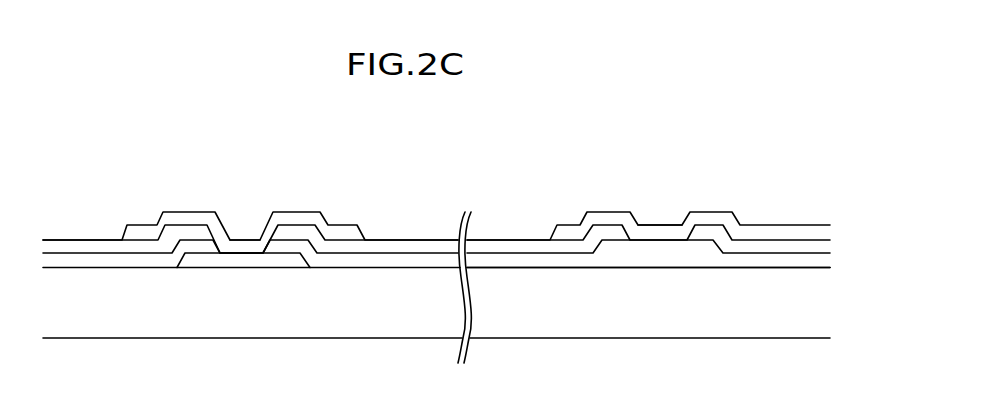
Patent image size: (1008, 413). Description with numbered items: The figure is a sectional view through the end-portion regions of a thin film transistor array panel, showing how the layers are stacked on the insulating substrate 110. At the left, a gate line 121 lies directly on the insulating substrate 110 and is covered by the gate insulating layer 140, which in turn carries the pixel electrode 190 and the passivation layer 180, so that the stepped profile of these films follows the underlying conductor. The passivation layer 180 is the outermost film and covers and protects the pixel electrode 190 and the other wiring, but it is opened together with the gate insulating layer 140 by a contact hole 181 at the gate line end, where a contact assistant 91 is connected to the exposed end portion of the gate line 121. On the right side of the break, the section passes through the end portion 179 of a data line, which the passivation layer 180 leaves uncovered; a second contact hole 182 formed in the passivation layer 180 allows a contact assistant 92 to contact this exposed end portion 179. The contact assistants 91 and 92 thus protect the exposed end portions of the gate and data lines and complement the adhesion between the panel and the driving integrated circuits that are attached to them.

The insulating substrate 110 is at (423, 325).
The gate line 121 is at (243, 262).
The gate insulating layer 140 is at (340, 262).
The end portion of data line 179 is at (650, 247).
The passivation layer 180 is at (768, 248).
The contact hole 181 is at (240, 219).
The contact hole 182 is at (660, 213).
The pixel electrode 190 is at (135, 247).
The contact assistant 91 is at (187, 217).
The contact assistant 92 is at (605, 220).